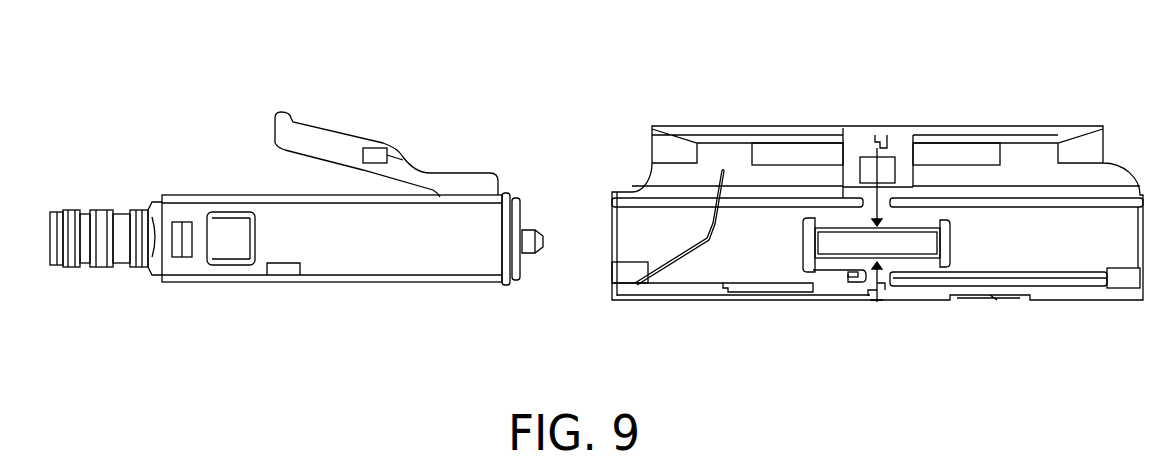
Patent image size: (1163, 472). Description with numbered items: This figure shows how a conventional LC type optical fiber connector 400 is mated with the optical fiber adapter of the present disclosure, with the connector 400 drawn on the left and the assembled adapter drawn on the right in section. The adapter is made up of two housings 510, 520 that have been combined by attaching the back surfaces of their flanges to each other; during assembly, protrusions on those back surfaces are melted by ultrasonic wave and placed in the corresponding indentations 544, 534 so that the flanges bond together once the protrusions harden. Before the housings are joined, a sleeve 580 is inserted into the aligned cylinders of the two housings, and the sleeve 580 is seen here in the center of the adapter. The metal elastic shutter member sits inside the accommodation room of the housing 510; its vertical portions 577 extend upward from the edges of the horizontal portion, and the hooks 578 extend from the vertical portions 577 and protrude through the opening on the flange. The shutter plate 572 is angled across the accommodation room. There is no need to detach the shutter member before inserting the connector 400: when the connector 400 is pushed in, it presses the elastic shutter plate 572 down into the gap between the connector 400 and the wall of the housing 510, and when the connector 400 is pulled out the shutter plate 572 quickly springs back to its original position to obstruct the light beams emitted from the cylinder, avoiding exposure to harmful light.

The optical fiber connector 400 is at (197, 165).
The housing 510 is at (726, 117).
The housing 520 is at (1002, 122).
The indentation 534 is at (872, 298).
The indentation 544 is at (883, 132).
The shutter plate 572 is at (722, 223).
The vertical portion 577 is at (760, 272).
The hook 578 is at (853, 278).
The sleeve 580 is at (897, 232).